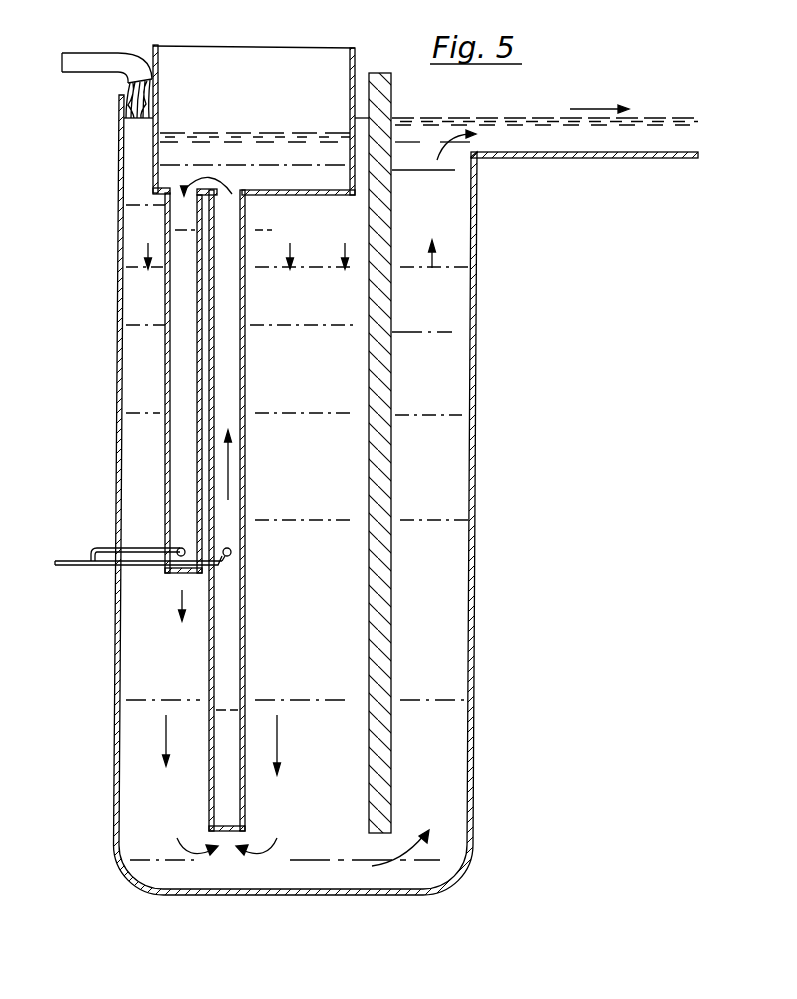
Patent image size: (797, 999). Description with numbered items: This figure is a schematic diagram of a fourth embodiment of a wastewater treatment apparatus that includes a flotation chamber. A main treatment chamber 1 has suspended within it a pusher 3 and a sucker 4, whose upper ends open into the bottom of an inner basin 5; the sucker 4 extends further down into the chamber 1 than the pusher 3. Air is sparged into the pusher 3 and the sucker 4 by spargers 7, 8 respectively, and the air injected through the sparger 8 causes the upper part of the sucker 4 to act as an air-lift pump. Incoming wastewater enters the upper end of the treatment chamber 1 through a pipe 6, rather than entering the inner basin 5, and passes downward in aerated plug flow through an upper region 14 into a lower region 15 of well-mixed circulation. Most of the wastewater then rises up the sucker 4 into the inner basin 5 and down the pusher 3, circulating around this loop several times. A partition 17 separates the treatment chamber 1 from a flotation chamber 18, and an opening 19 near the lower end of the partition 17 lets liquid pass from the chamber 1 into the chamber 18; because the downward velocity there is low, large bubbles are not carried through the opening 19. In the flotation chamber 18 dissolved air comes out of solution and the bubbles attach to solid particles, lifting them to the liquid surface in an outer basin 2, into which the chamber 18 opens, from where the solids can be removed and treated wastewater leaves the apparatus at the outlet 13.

The main treatment chamber 1 is at (140, 422).
The outer basin 2 is at (513, 148).
The pusher 3 is at (181, 306).
The sucker 4 is at (222, 347).
The inner basin 5 is at (180, 120).
The pipe 6 is at (100, 66).
The sparger 7 is at (180, 546).
The sparger 8 is at (232, 553).
The outlet 13 is at (643, 140).
The upper region 14 is at (133, 269).
The lower region 15 is at (135, 749).
The partition 17 is at (378, 362).
The flotation chamber 18 is at (440, 450).
The opening 19 is at (383, 873).